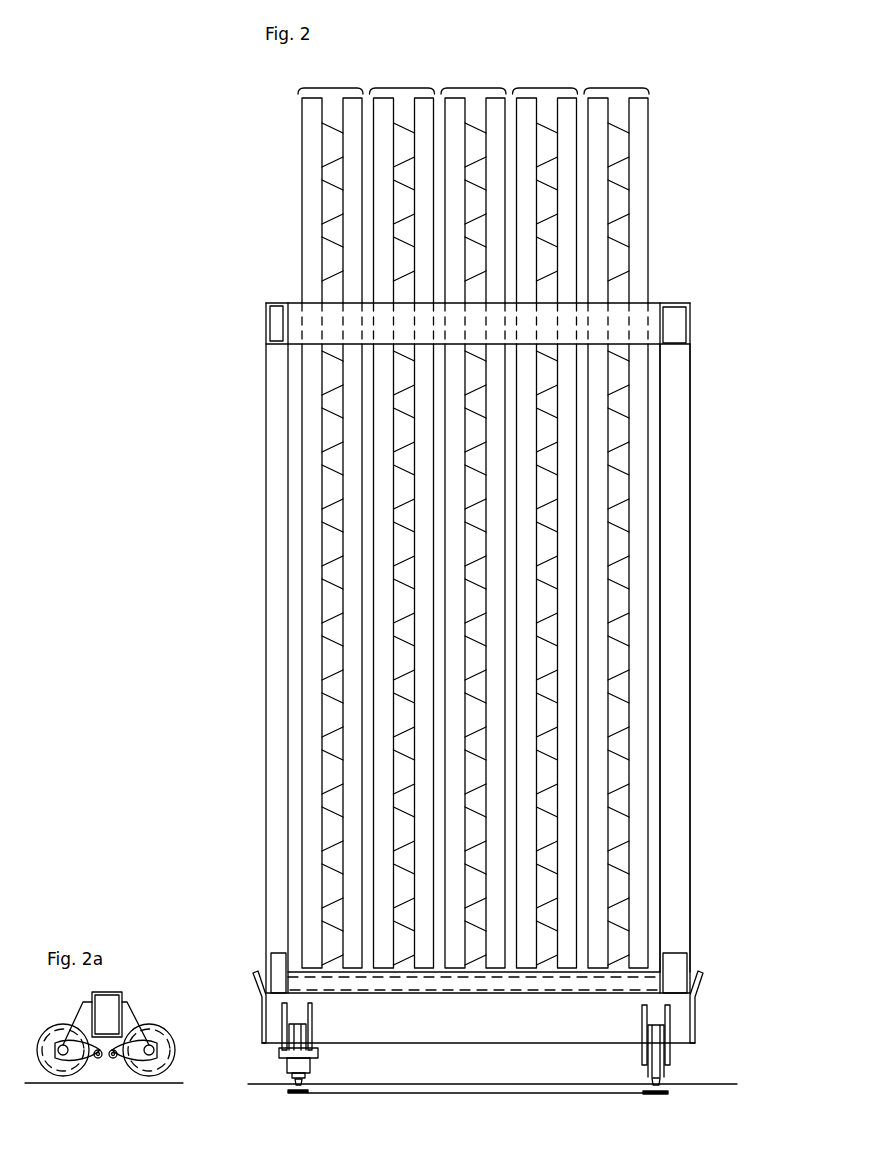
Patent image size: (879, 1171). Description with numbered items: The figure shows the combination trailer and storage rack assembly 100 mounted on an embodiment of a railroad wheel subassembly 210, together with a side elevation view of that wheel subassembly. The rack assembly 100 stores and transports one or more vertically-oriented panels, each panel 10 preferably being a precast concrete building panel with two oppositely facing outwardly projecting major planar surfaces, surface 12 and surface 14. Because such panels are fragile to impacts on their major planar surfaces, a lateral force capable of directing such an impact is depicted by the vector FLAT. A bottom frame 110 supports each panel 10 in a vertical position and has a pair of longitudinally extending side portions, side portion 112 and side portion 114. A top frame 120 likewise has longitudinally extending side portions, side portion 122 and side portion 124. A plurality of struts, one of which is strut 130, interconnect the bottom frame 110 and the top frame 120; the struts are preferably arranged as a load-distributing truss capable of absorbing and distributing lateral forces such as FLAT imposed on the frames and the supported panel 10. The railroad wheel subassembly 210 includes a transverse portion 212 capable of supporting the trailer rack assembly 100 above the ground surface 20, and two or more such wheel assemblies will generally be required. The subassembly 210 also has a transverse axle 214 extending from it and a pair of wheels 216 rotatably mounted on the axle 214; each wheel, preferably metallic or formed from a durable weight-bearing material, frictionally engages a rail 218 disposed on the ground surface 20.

In FIG. 2, the panel 10 is at (617, 88).
In FIG. 2, the surface 12 is at (640, 444).
In FIG. 2, the surface 14 is at (590, 472).
In FIG. 2, the ground surface 20 is at (705, 1084).
In FIG. 2, the combination trailer and storage rack assembly 100 is at (247, 297).
In FIG. 2, the bottom frame 110 is at (713, 952).
In FIG. 2, the side portion 112 is at (681, 963).
In FIG. 2, the side portion 114 is at (275, 958).
In FIG. 2, the top frame 120 is at (704, 305).
In FIG. 2, the side portion 122 is at (677, 332).
In FIG. 2, the side portion 124 is at (272, 322).
In FIG. 2, the strut 130 is at (680, 566).
In FIG. 2, the railroad wheel subassembly 210 is at (277, 1020).
In FIG. 2A, the railroad wheel subassembly 210 is at (143, 1003).
In FIG. 2, the transverse portion 212 is at (689, 1021).
In FIG. 2, the transverse axle 214 is at (280, 1051).
In FIG. 2A, the transverse axle 214 is at (148, 1066).
In FIG. 2, the wheels 216 is at (284, 1068).
In FIG. 2A, the wheels 216 is at (172, 1070).
In FIG. 2, the rail 218 is at (305, 1093).
In FIG. 2, the lateral force vector FLAT is at (263, 615).